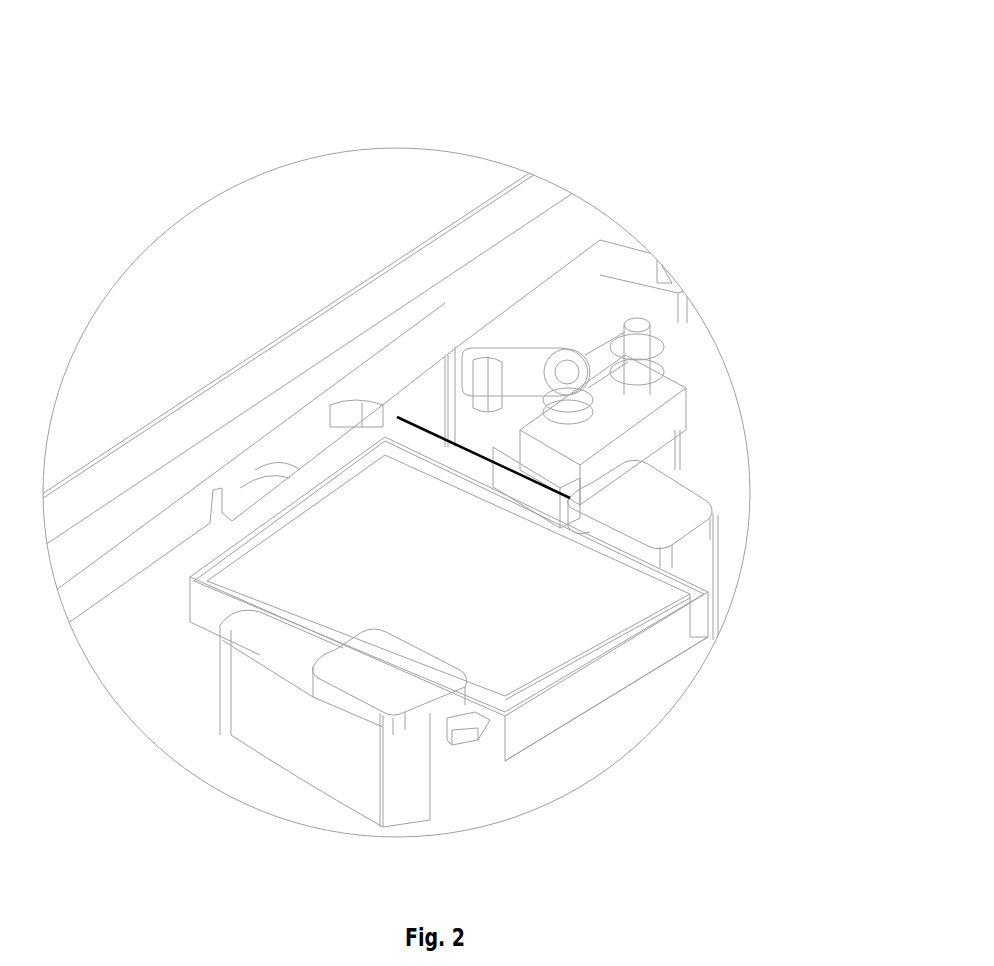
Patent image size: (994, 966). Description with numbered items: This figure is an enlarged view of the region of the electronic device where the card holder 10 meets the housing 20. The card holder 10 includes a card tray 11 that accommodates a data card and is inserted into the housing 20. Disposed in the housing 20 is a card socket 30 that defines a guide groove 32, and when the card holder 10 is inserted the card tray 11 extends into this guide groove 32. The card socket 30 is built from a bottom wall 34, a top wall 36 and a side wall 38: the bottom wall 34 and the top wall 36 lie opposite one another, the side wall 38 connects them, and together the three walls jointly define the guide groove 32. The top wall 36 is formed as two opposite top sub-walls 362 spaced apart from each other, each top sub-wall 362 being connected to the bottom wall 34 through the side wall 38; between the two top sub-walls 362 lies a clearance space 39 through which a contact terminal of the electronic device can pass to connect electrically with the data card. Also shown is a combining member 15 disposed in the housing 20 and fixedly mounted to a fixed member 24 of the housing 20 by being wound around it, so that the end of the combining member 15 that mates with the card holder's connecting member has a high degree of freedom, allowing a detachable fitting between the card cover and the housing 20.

The card holder 10 is at (290, 493).
The card tray 11 is at (603, 657).
The combining member 15 is at (550, 352).
The housing 20 is at (447, 293).
The fixed member 24 is at (663, 390).
The card socket 30 is at (222, 708).
The guide groove 32 is at (447, 740).
The bottom wall 34 is at (703, 630).
The top wall 36 is at (693, 502).
The side wall 38 is at (705, 570).
The clearance space 39 is at (583, 590).
The top sub-walls 362 is at (380, 685).